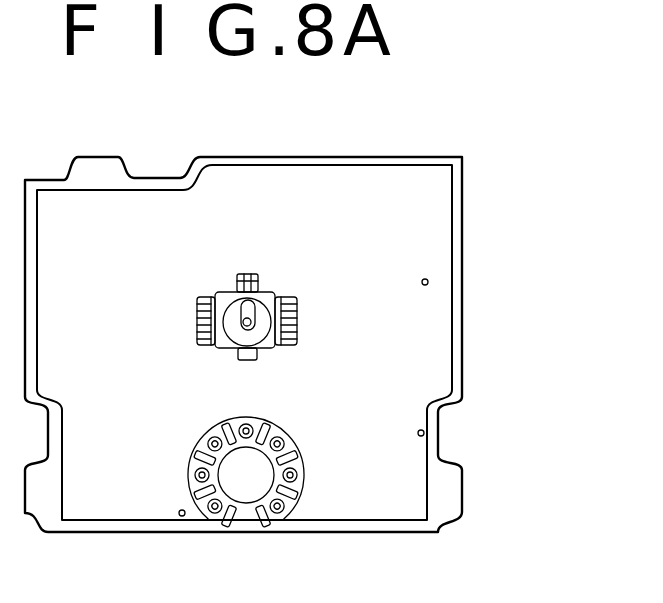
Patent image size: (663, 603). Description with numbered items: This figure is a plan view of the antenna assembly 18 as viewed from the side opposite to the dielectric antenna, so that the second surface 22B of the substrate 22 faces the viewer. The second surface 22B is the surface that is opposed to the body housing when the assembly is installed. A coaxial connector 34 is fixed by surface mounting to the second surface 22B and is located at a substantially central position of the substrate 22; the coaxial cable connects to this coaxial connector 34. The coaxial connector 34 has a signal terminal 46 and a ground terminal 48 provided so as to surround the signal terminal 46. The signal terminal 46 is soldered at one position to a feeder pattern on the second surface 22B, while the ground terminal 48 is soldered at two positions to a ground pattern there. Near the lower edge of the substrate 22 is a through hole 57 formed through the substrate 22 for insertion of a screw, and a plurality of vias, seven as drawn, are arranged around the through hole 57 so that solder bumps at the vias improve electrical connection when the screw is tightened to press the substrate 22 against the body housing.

The antenna assembly 18 is at (307, 337).
The substrate 22 is at (467, 253).
The second surface 22B is at (457, 356).
The coaxial connector 34 is at (246, 303).
The signal terminal 46 is at (245, 317).
The ground terminal 48 is at (262, 338).
The through hole 57 is at (240, 497).